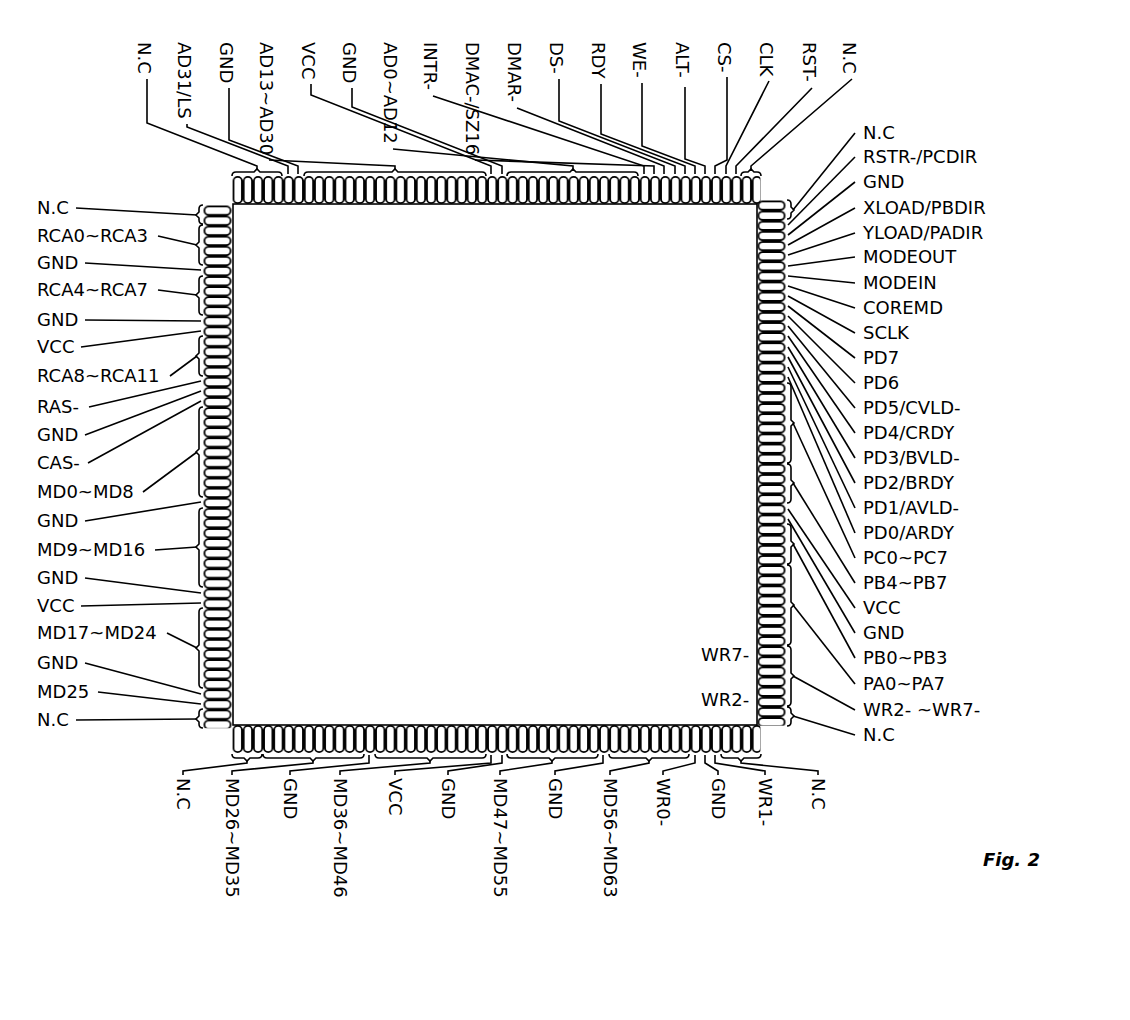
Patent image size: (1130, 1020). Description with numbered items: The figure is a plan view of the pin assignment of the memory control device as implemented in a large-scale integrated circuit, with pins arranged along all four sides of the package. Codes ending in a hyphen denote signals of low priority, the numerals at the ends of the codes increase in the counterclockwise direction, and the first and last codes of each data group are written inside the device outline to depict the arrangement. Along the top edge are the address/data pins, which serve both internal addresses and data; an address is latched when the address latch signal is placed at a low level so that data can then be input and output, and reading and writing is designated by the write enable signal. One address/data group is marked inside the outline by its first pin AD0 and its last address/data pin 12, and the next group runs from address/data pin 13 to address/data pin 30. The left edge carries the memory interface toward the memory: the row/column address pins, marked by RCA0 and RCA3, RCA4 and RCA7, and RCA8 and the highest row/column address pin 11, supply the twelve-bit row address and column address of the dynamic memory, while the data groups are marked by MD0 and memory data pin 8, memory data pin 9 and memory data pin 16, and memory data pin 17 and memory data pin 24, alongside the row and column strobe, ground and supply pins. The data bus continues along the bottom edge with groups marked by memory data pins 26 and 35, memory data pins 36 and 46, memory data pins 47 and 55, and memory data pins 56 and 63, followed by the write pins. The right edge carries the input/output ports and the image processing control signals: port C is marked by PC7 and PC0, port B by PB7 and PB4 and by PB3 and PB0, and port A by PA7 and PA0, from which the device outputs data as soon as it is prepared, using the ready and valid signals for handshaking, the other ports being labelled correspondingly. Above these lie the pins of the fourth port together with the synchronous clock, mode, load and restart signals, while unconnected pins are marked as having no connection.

The address/data pin AD30 30 is at (312, 236).
The address/data pin AD13 13 is at (480, 236).
The address/data pin AD12 12 is at (510, 236).
The address/data pin AD0 is at (625, 231).
The memory data pin MD26 26 is at (268, 689).
The memory data pin MD35 35 is at (355, 689).
The memory data pin MD36 36 is at (378, 689).
The memory data pin MD46 46 is at (480, 689).
The memory data pin MD47 47 is at (512, 689).
The memory data pin MD55 55 is at (590, 689).
The memory data pin MD56 56 is at (612, 689).
The memory data pin MD63 63 is at (685, 689).
The row/column address pin RCA11 11 is at (269, 371).
The memory data pin MD8 8 is at (260, 489).
The memory data pin MD9 9 is at (260, 512).
The memory data pin MD16 16 is at (266, 579).
The memory data pin MD17 17 is at (266, 609).
The memory data pin MD24 24 is at (266, 679).
The row/column address pin RCA0 is at (264, 235).
The row/column address pin RCA3 is at (264, 262).
The row/column address pin RCA4 is at (264, 289).
The row/column address pin RCA7 is at (264, 315).
The row/column address pin RCA8 is at (264, 342).
The memory data pin MD0 is at (260, 404).
The port C pin PC7 is at (732, 399).
The port C pin PC0 is at (732, 454).
The port B pin PB7 is at (732, 477).
The port B pin PB4 is at (732, 499).
The port B pin PB3 is at (732, 531).
The port B pin PB0 is at (732, 552).
The port A pin PA7 is at (731, 567).
The port A pin PA0 is at (731, 631).